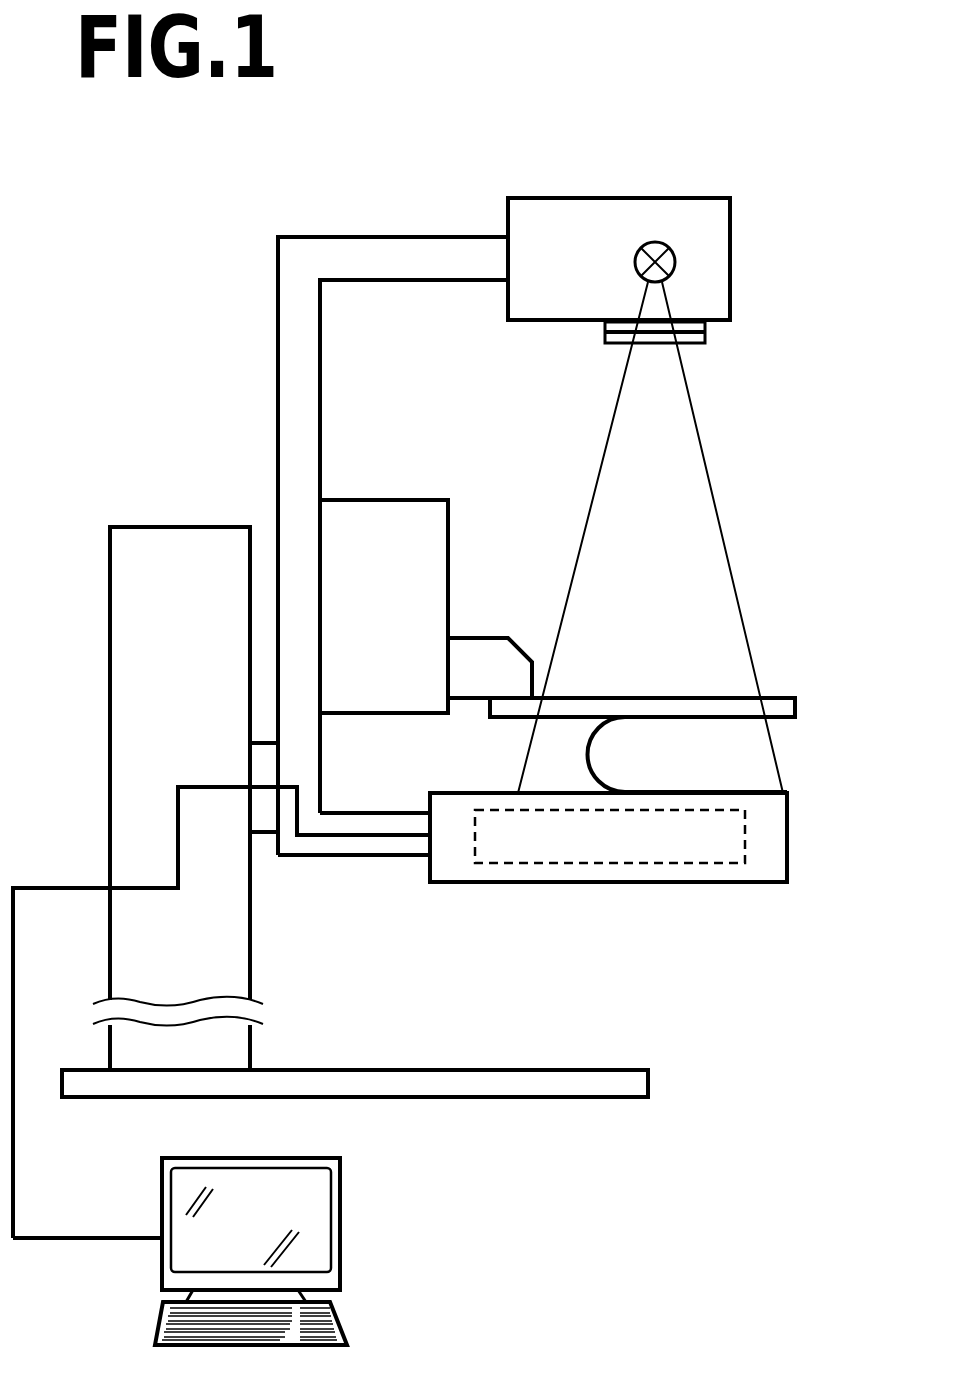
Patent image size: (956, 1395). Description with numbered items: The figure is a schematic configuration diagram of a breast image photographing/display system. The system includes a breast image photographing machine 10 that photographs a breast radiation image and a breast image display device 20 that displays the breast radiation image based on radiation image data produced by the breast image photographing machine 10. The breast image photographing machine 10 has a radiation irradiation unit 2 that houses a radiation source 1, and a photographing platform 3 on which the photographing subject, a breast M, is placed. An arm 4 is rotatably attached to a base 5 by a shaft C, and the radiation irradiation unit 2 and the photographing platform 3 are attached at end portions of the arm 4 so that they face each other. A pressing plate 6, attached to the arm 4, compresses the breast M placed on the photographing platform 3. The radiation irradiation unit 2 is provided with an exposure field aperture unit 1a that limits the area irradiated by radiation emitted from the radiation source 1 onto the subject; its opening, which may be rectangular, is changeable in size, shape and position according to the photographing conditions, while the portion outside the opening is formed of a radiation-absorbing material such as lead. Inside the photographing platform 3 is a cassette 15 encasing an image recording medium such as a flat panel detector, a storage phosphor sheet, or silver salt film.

The breast image photographing machine 10 is at (775, 122).
The radiation source 1 is at (655, 242).
The exposure field aperture unit 1a is at (705, 334).
The radiation irradiation unit 2 is at (705, 257).
The photographing platform 3 is at (757, 842).
The arm 4 is at (296, 248).
The base 5 is at (122, 600).
The pressing plate 6 is at (653, 705).
The cassette 15 is at (573, 863).
The breast M is at (605, 760).
The shaft C is at (263, 835).
The breast image display device 20 is at (340, 1188).